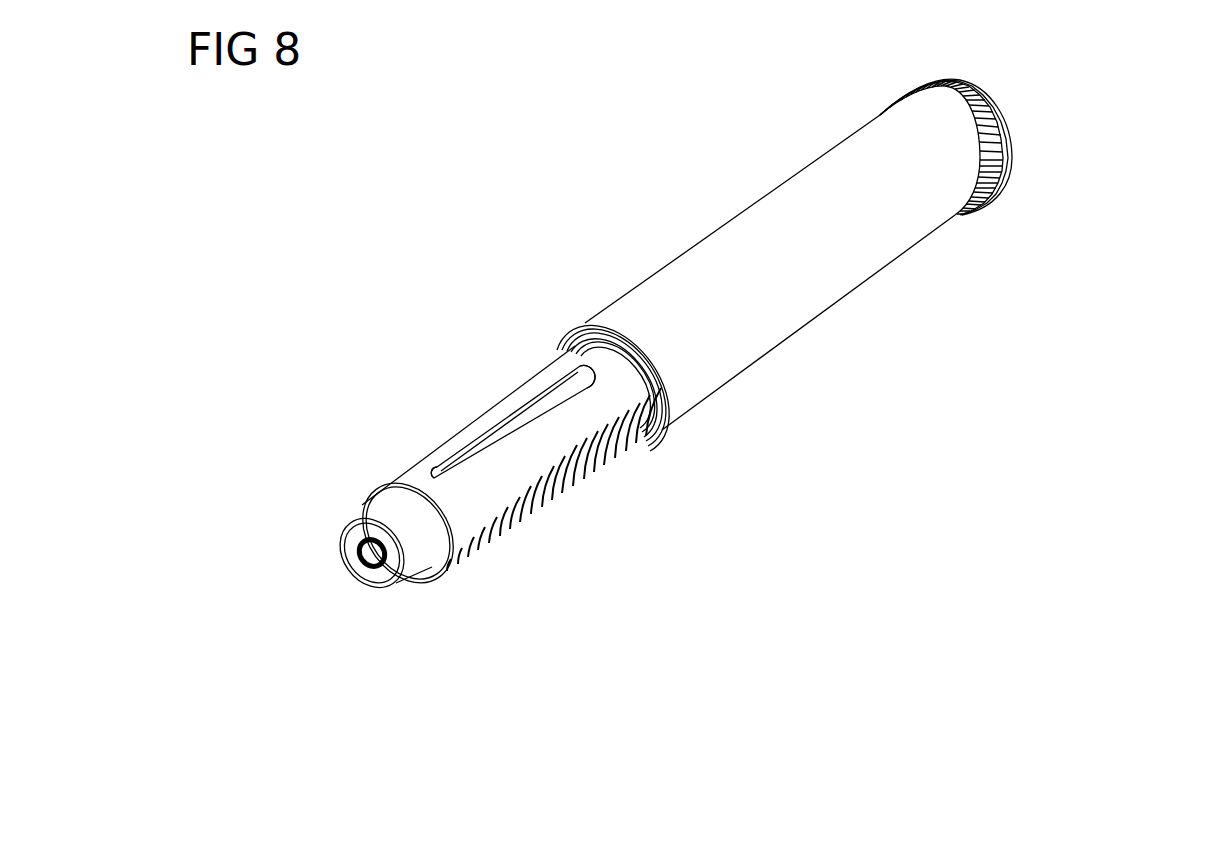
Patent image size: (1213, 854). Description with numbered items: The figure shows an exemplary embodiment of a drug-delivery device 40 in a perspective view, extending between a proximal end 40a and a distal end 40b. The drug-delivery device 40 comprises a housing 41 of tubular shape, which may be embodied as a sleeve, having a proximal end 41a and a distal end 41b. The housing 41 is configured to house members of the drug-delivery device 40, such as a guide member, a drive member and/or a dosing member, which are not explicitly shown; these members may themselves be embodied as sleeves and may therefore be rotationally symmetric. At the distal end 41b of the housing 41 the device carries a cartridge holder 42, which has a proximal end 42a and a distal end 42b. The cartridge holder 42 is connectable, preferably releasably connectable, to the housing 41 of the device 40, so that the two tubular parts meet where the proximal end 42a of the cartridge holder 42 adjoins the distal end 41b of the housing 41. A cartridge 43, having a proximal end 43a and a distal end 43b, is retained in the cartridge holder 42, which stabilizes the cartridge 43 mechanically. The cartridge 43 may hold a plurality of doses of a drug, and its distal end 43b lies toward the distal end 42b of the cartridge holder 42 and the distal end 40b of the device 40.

The drug-delivery device 40 is at (832, 350).
The proximal end of the drug-delivery device 40a is at (1017, 102).
The distal end of the drug-delivery device 40b is at (314, 567).
The housing 41 is at (700, 277).
The proximal end of the housing 41a is at (942, 175).
The distal end of the housing 41b is at (647, 335).
The cartridge holder 42 is at (575, 478).
The proximal end of the cartridge holder 42a is at (608, 383).
The distal end of the cartridge holder 42b is at (378, 512).
The cartridge 43 is at (510, 435).
The proximal end of the cartridge 43a is at (570, 390).
The distal end of the cartridge 43b is at (448, 473).